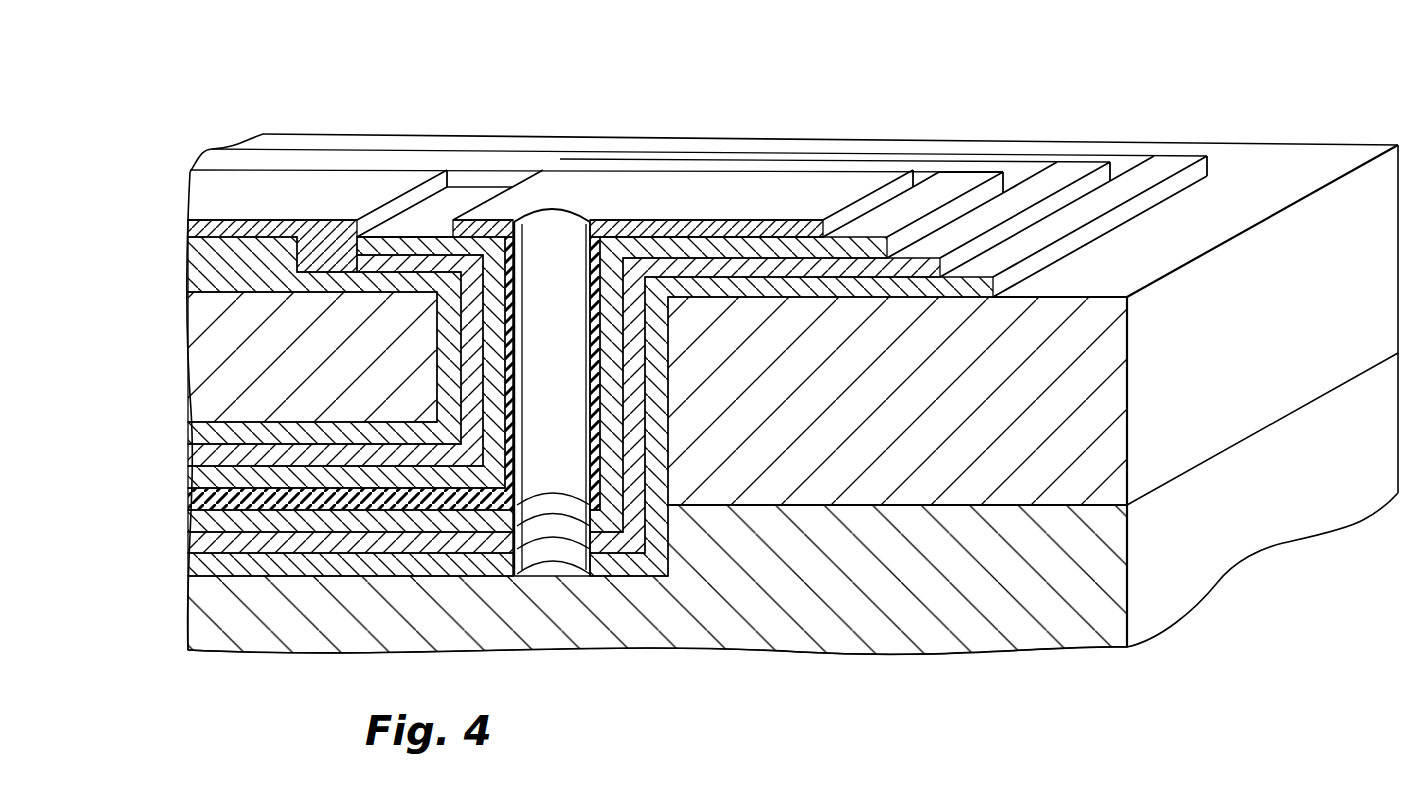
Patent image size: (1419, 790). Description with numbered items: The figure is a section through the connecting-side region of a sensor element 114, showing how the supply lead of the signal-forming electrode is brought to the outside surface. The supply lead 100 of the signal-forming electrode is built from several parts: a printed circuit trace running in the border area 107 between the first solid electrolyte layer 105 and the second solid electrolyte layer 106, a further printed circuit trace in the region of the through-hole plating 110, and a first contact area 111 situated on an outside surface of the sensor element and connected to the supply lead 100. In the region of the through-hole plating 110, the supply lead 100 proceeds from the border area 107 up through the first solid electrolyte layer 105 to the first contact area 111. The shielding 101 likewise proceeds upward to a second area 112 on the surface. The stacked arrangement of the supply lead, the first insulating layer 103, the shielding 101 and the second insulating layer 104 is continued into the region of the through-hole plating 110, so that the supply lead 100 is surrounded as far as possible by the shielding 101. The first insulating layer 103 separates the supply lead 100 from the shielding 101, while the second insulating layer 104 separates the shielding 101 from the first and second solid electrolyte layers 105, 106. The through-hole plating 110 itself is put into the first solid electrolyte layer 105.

The supply lead of the signal-forming electrode 100 is at (197, 495).
The shielding 101 is at (197, 452).
The first insulating layer 103 is at (482, 186).
The second insulating layer 104 is at (192, 429).
The first solid electrolyte layer 105 is at (212, 345).
The second solid electrolyte layer 106 is at (217, 608).
The border area 107 is at (1013, 507).
The through-hole plating 110 is at (563, 210).
The first contact area 111 is at (833, 182).
The second area 112 is at (332, 188).
The sensor element 114 is at (1132, 118).